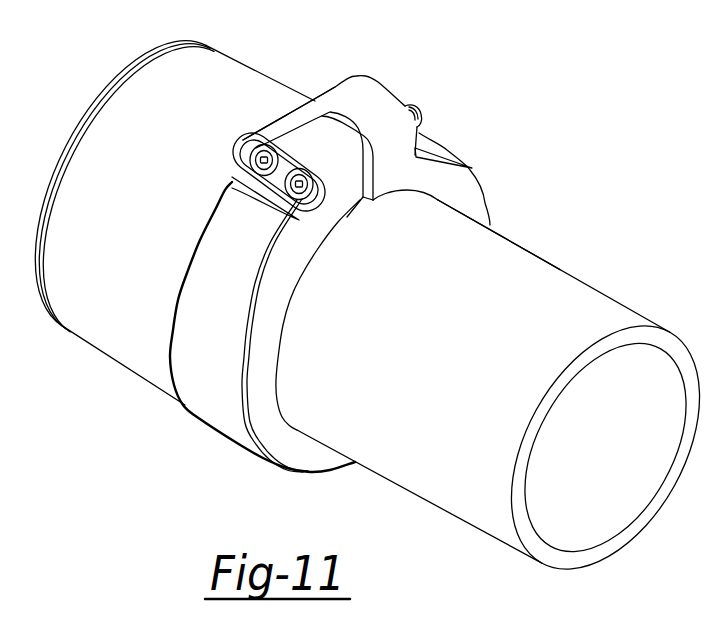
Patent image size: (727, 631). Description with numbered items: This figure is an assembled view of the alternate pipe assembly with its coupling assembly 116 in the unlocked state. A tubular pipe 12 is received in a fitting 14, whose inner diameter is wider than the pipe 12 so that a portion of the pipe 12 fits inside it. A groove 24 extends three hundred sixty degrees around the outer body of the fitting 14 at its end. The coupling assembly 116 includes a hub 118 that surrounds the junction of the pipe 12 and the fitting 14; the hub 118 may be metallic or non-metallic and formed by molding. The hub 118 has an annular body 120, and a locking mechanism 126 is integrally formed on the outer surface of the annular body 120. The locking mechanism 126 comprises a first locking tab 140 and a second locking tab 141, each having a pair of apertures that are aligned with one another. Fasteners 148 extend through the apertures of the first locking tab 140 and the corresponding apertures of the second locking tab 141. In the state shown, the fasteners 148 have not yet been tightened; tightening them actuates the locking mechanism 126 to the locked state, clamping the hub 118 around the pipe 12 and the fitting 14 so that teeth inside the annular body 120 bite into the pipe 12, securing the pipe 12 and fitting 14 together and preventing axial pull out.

The pipe 12 is at (580, 278).
The fitting 14 is at (333, 123).
The groove 24 is at (106, 107).
The coupling assembly 116 is at (506, 129).
The hub 118 is at (517, 196).
The annular body 120 is at (183, 403).
The locking mechanism 126 is at (398, 92).
The first locking tab 140 is at (351, 88).
The second locking tab 141 is at (278, 133).
The fasteners 148 is at (290, 183).